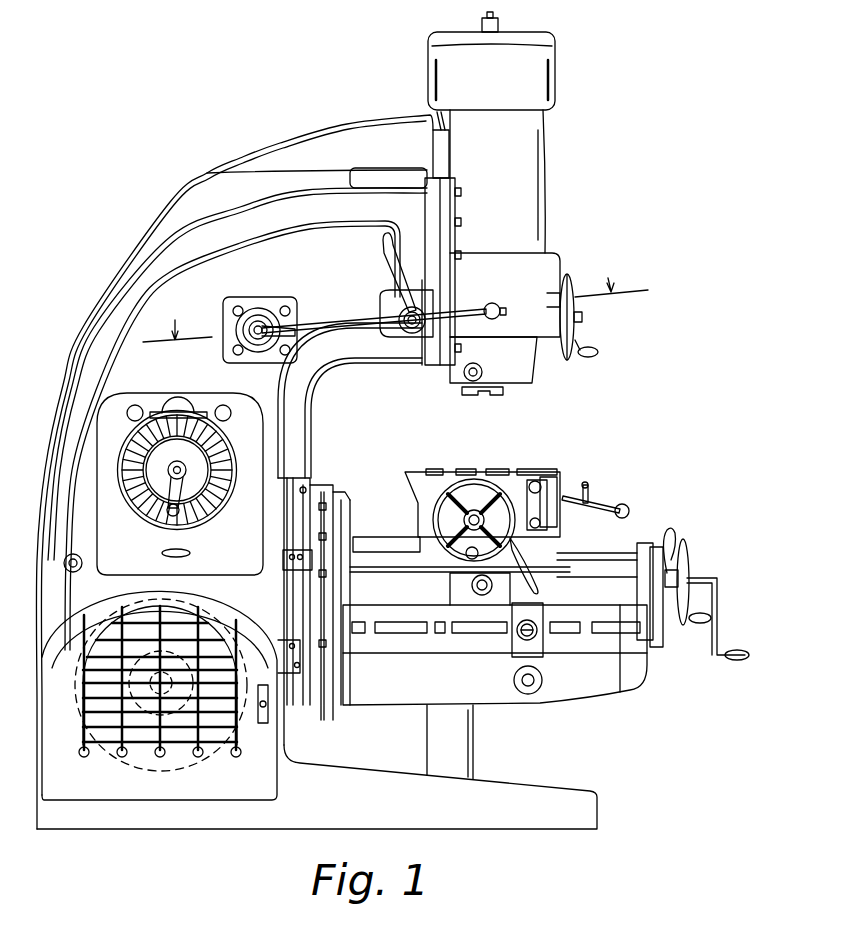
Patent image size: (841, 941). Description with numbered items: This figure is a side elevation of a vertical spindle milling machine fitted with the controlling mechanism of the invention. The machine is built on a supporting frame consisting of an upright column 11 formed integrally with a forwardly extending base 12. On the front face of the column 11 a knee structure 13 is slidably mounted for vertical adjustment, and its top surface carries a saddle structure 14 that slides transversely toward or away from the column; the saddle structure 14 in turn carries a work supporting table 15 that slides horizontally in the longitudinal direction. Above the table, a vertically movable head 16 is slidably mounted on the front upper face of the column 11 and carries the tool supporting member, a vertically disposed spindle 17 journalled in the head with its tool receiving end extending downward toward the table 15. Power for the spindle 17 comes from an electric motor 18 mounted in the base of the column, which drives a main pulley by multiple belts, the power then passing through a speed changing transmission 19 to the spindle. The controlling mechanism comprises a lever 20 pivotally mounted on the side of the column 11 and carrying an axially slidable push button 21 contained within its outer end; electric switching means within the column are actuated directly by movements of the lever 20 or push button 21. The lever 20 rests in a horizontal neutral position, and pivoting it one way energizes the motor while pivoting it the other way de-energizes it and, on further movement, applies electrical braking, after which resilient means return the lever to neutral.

The upright column 11 is at (178, 244).
The base 12 is at (545, 822).
The knee structure 13 is at (565, 687).
The saddle structure 14 is at (578, 528).
The work supporting table 15 is at (520, 472).
The vertically movable head 16 is at (528, 166).
The spindle 17 is at (507, 388).
The electric motor 18 is at (140, 766).
The speed changing transmission 19 is at (105, 462).
The lever 20 is at (360, 327).
The push button 21 is at (501, 302).